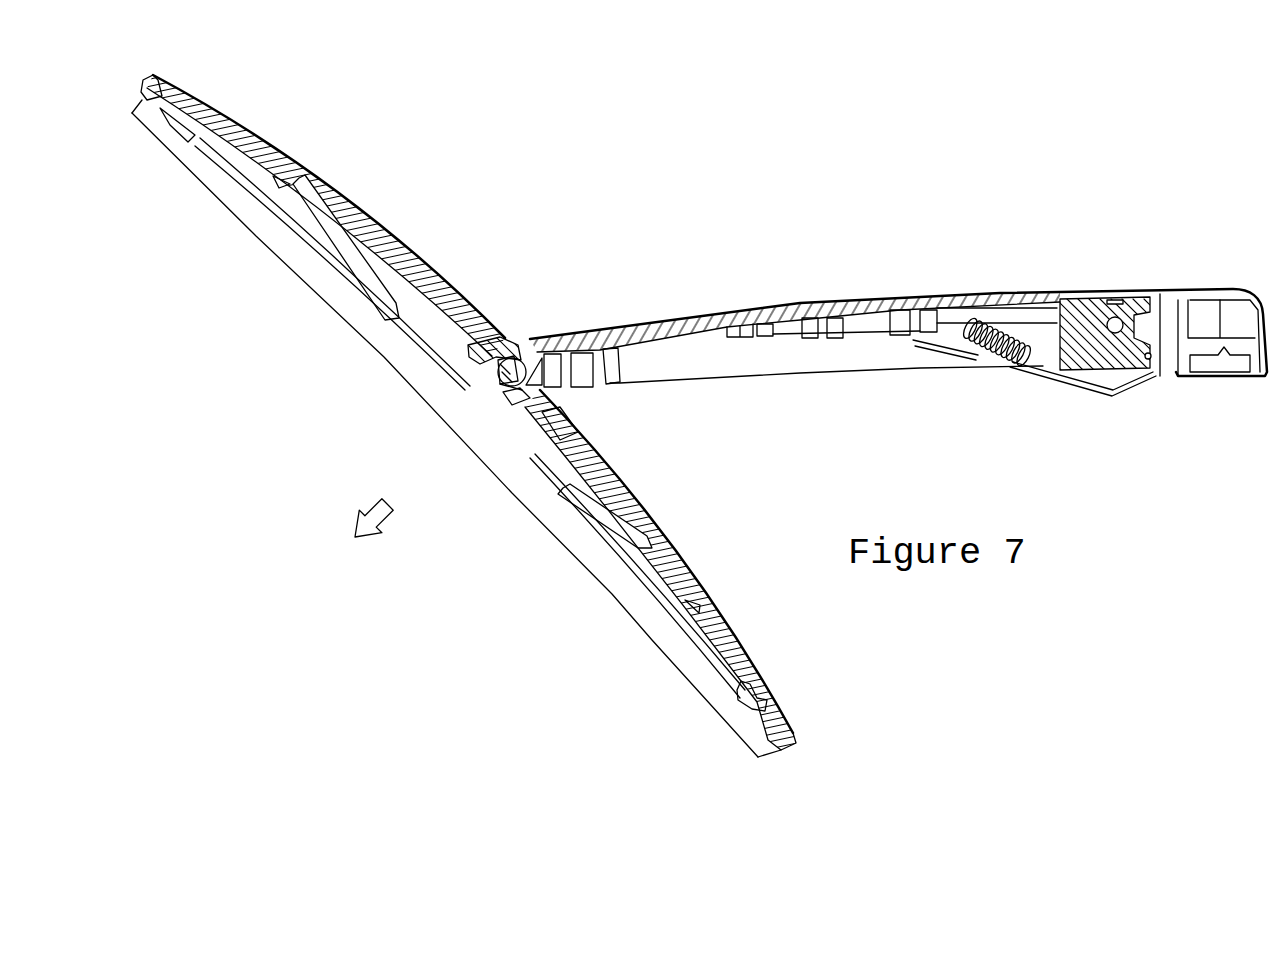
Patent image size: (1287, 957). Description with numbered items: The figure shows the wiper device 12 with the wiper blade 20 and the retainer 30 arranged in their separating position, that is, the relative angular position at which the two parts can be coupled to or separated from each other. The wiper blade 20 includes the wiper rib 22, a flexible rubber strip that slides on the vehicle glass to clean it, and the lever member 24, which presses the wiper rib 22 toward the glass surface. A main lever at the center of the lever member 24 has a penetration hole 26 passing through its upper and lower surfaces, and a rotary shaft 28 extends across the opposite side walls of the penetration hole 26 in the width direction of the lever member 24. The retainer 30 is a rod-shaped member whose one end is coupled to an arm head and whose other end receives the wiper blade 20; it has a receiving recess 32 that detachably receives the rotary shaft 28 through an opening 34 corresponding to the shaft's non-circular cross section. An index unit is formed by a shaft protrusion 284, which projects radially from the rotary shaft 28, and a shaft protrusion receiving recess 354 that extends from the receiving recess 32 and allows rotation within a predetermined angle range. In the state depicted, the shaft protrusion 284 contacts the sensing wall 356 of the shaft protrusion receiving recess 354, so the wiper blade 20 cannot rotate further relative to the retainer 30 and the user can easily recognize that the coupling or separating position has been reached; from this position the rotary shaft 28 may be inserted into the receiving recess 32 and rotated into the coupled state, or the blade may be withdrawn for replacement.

The wiper device 12 is at (783, 205).
The wiper blade 20 is at (437, 268).
The wiper rib 22 is at (332, 291).
The lever member 24 is at (418, 264).
The penetration hole 26 is at (503, 340).
The rotary shaft 28 is at (512, 383).
The retainer 30 is at (654, 316).
The receiving recess 32 is at (512, 400).
The opening 34 is at (502, 383).
The shaft protrusion 284 is at (518, 360).
The shaft protrusion receiving recess 354 is at (493, 360).
The sensing wall 356 is at (580, 380).